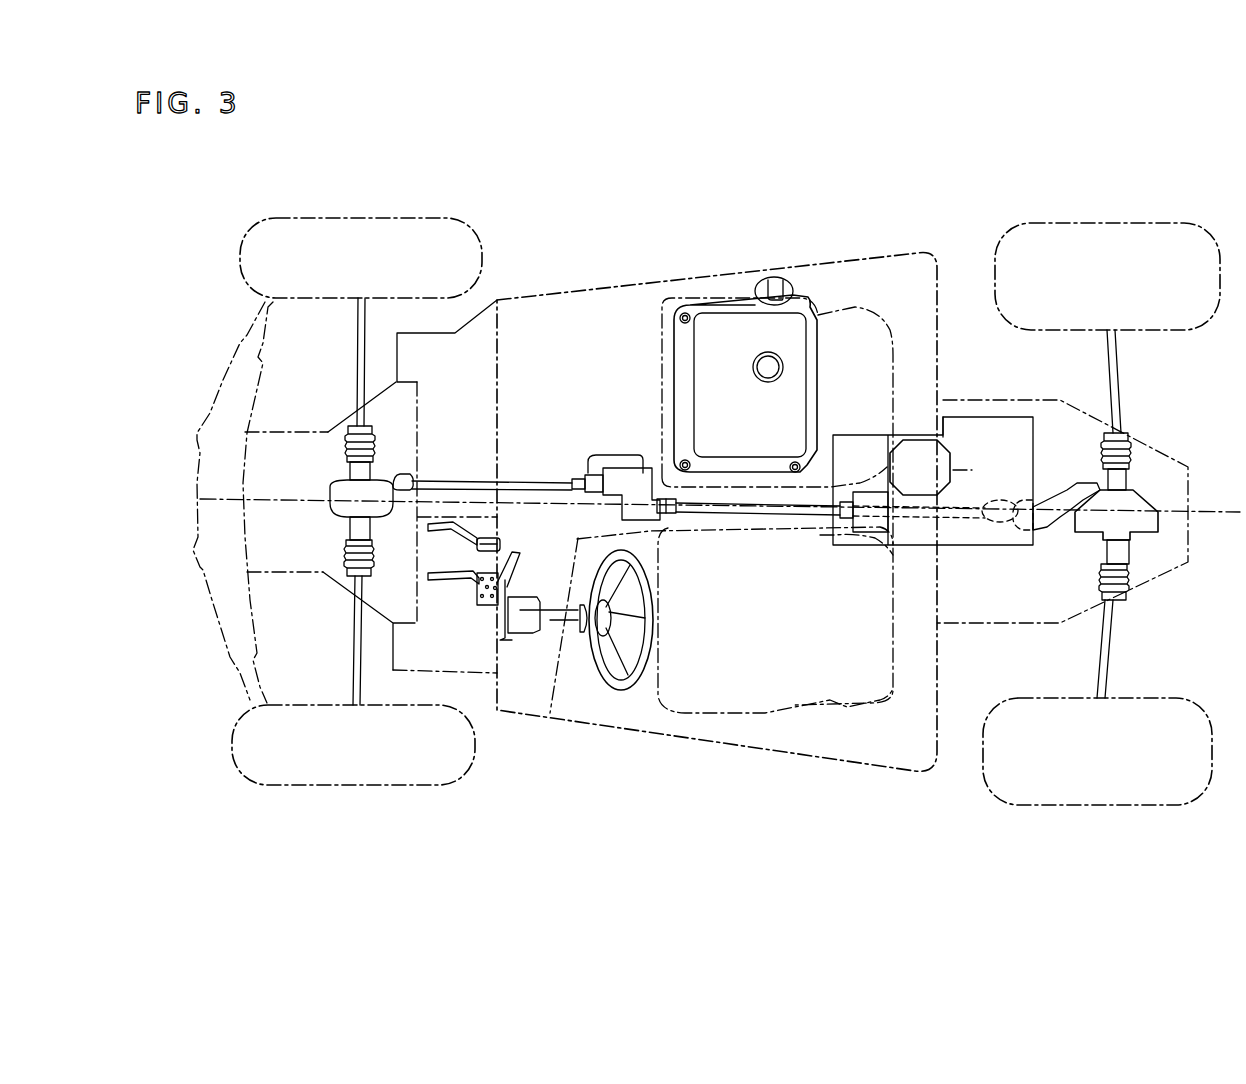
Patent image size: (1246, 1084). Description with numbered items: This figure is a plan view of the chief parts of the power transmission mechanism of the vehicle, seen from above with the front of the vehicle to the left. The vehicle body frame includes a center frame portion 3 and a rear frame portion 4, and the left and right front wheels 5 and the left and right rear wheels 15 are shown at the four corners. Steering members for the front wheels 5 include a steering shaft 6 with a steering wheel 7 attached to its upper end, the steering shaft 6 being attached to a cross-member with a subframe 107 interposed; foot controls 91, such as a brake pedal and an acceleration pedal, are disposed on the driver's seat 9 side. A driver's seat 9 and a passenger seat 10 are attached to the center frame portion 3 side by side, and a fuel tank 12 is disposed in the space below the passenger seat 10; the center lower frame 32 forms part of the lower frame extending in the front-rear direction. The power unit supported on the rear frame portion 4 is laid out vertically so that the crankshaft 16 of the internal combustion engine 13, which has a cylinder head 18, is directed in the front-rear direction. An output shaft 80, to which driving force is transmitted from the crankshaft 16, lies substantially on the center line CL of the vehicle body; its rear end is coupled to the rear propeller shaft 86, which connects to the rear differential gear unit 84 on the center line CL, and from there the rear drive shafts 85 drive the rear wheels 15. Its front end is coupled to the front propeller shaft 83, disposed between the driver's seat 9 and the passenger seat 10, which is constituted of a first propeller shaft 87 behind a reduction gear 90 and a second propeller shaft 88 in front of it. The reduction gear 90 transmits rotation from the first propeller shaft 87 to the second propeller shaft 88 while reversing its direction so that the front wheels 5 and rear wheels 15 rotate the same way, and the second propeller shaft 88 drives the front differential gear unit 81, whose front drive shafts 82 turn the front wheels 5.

The center frame portion 3 is at (727, 747).
The rear frame portion 4 is at (1150, 585).
The front wheels 5 is at (322, 823).
The steering shaft 6 is at (548, 613).
The steering wheel 7 is at (632, 687).
The driver's seat 9 is at (767, 713).
The passenger seat 10 is at (855, 305).
The fuel tank 12 is at (718, 333).
The internal combustion engine 13 is at (957, 427).
The rear wheels 15 is at (1087, 843).
The crankshaft 16 is at (960, 470).
The cylinder head 18 is at (918, 457).
The center lower frame 32 is at (277, 572).
The output shaft 80 is at (948, 518).
The front differential gear unit 81 is at (347, 490).
The front drive shafts 82 is at (355, 640).
The front propeller shaft 83 is at (663, 215).
The rear differential gear unit 84 is at (1133, 500).
The rear drive shafts 85 is at (1113, 642).
The rear propeller shaft 86 is at (1053, 507).
The first propeller shaft 87 is at (713, 500).
The second propeller shaft 88 is at (578, 457).
The reduction gear 90 is at (633, 490).
The foot controls 91 is at (493, 605).
The subframe 107 is at (508, 638).
The center line CL is at (1225, 512).